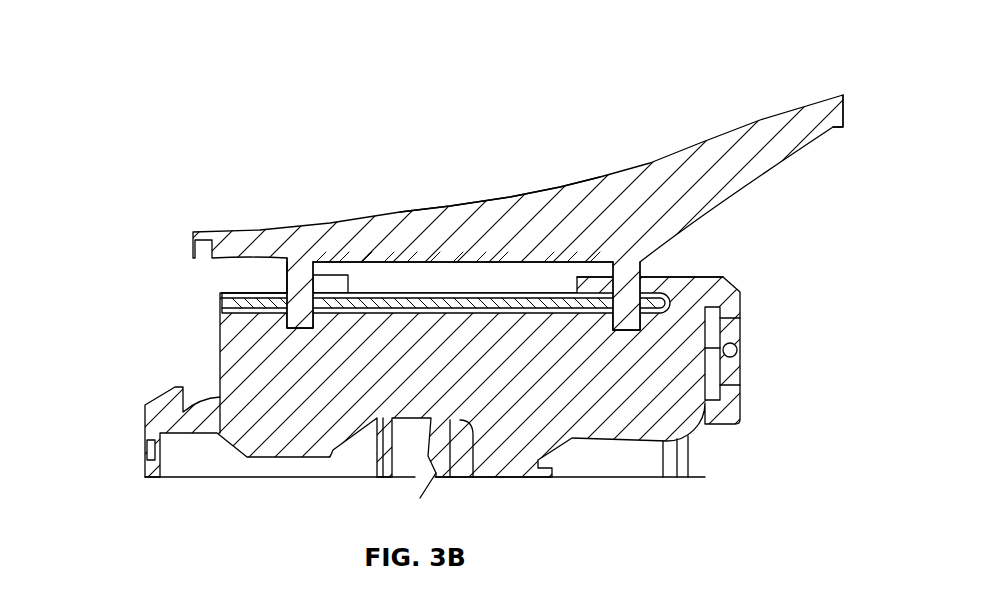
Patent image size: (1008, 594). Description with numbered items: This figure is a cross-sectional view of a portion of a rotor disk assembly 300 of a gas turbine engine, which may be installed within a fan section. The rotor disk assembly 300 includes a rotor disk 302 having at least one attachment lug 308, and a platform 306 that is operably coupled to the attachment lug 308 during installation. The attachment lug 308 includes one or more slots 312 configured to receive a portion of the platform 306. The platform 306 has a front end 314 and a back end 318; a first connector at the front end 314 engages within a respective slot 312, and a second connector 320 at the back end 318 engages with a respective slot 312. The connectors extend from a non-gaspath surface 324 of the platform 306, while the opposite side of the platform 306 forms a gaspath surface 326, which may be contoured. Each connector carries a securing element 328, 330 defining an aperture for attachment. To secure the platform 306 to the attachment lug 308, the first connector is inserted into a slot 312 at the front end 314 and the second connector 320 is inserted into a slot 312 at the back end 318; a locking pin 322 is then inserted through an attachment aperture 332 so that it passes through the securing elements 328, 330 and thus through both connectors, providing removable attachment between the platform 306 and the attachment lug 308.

The rotor disk assembly 300 is at (303, 97).
The rotor disk 302 is at (504, 297).
The platform 306 is at (687, 152).
The attachment lug 308 is at (733, 267).
The slot 312 is at (303, 330).
The front end 314 is at (192, 196).
The back end 318 is at (845, 91).
The second connector 320 is at (646, 268).
The locking pin 322 is at (500, 310).
The non-gaspath surface 324 is at (438, 265).
The gaspath surface 326 is at (507, 194).
The securing element 328 is at (303, 293).
The securing element 330 is at (633, 283).
The attachment aperture 332 is at (211, 305).